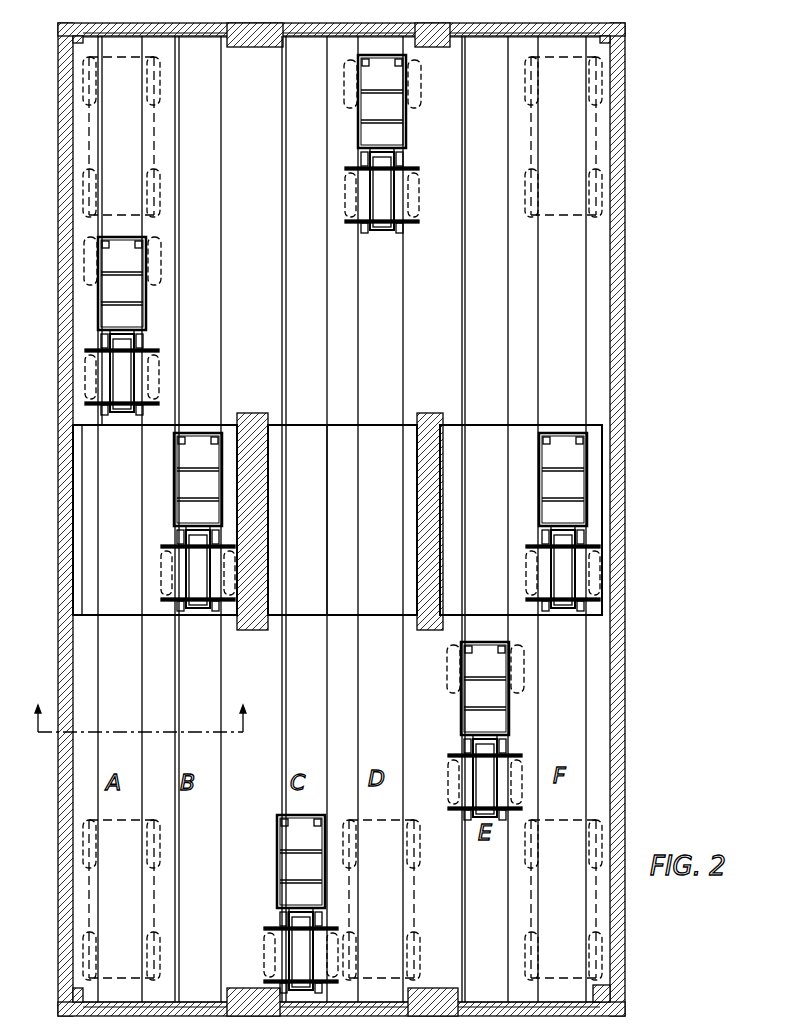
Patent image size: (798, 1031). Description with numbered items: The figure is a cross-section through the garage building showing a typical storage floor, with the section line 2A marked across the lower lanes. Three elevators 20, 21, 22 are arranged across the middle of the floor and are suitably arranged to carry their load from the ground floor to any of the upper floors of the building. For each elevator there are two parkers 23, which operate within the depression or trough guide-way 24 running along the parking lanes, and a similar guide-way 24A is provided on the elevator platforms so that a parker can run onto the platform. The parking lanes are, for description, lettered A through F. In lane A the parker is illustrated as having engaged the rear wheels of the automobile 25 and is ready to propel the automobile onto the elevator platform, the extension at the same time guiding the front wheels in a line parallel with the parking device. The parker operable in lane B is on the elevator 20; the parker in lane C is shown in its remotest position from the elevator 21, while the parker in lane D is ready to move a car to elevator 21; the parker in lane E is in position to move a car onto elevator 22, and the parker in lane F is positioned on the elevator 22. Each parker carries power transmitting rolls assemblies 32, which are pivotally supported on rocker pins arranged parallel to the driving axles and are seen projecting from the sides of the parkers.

The elevator 20 is at (155, 520).
The elevator 21 is at (342, 520).
The elevator 22 is at (521, 520).
The parker 23 is at (147, 348).
The guide-way 24 is at (142, 660).
The guide-way 24A is at (345, 468).
The automobile 25 is at (412, 105).
The power transmitting rolls assemblies 32 is at (160, 357).
The section line 2A- 2A is at (137, 734).